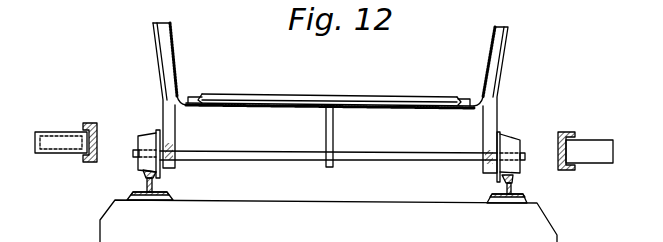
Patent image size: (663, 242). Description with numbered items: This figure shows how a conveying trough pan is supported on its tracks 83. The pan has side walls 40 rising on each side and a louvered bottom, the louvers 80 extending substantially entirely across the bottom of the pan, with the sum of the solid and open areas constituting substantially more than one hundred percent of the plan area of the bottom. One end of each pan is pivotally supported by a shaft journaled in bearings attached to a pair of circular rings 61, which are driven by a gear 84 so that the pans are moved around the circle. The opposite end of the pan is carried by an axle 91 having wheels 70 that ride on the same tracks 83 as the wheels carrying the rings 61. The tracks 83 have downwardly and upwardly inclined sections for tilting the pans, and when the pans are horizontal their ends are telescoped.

The side walls 40 is at (492, 47).
The louvers 80 is at (372, 100).
The axle 91 is at (409, 160).
The wheels 70 is at (146, 143).
The tracks 83 is at (140, 180).
The gear 84 is at (50, 133).
The circular rings 61 is at (82, 162).